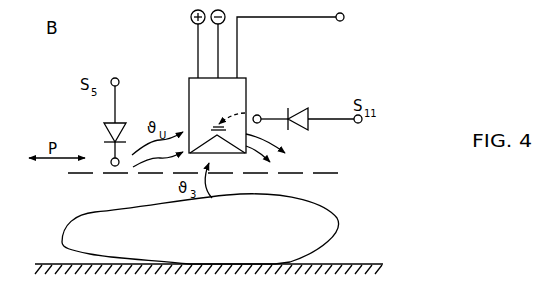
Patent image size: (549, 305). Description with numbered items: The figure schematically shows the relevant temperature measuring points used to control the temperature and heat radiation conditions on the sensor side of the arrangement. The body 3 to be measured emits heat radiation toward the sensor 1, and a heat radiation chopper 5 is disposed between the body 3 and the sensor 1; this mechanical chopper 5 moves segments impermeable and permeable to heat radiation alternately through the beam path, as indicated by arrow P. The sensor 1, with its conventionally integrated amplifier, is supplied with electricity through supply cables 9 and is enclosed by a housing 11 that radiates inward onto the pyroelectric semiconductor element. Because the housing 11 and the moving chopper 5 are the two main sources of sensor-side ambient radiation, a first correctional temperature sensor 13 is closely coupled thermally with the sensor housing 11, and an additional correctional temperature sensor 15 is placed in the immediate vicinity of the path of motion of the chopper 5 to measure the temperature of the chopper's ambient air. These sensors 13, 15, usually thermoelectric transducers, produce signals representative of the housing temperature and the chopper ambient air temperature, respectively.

The sensor 1 is at (234, 90).
The body 3 is at (323, 221).
The heat radiation chopper 5 is at (331, 170).
The supply cables 9 is at (218, 54).
The housing 11 is at (247, 88).
The first correctional temperature sensor 13 is at (307, 129).
The additional correctional temperature sensor 15 is at (105, 125).